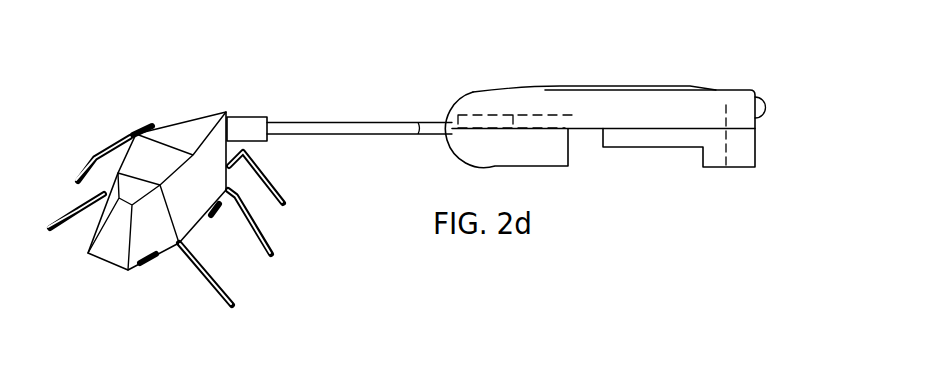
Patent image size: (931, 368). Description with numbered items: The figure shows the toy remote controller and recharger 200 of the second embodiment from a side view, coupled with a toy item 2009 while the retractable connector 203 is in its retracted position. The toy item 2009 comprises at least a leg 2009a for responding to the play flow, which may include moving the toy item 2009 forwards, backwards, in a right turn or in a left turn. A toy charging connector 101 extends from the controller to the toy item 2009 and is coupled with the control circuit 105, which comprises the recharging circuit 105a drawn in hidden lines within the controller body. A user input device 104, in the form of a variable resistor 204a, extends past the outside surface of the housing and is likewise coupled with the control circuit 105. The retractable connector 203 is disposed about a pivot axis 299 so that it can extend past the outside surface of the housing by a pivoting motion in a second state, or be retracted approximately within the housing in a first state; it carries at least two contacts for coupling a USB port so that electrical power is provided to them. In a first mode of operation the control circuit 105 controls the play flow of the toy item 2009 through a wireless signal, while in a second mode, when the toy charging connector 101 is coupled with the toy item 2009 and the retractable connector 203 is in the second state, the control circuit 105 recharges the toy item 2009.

The toy item 2009 is at (138, 270).
The leg 2009a is at (275, 255).
The toy charging connector 101 is at (353, 128).
The control circuit 105 is at (558, 122).
The recharging circuit 105a is at (487, 121).
The user input device 104 is at (714, 89).
The variable resistor 204a is at (688, 88).
The retractable connector 203 is at (662, 137).
The pivot axis 299 is at (727, 167).
The toy remote controller and recharger 200 is at (765, 62).